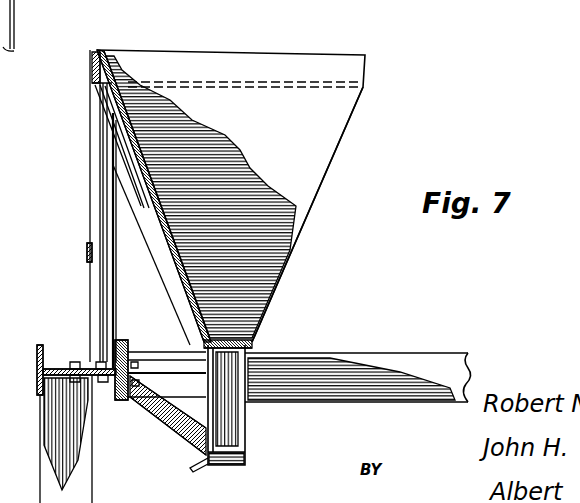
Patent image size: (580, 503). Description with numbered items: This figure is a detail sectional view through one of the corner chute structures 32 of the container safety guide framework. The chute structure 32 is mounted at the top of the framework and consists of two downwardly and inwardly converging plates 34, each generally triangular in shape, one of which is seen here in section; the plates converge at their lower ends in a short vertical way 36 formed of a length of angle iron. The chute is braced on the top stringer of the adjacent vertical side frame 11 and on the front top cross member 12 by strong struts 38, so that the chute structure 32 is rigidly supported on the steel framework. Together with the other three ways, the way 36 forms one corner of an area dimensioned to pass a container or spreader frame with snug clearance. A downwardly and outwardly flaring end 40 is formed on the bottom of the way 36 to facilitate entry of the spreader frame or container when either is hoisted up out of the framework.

The vertical side frame 11 is at (390, 352).
The top cross member 12 is at (47, 346).
The funnel type chute structure 32 is at (255, 40).
The converging plate 34 is at (323, 135).
The vertical way 36 is at (248, 424).
The strut 38 is at (98, 283).
The flaring end 40 is at (194, 468).